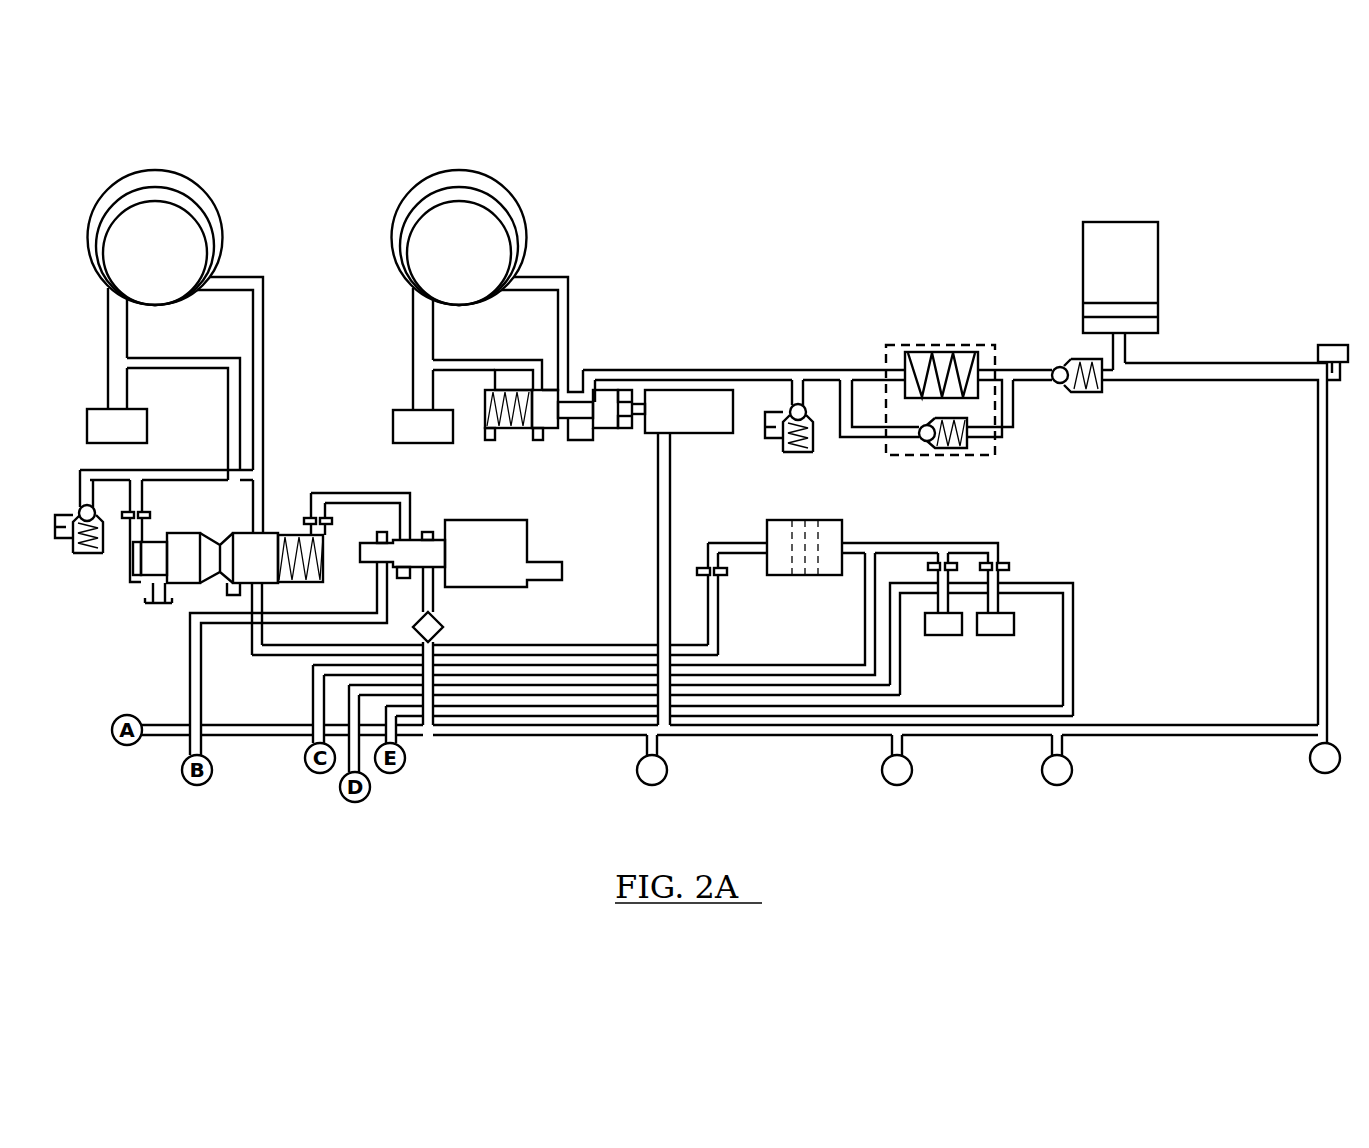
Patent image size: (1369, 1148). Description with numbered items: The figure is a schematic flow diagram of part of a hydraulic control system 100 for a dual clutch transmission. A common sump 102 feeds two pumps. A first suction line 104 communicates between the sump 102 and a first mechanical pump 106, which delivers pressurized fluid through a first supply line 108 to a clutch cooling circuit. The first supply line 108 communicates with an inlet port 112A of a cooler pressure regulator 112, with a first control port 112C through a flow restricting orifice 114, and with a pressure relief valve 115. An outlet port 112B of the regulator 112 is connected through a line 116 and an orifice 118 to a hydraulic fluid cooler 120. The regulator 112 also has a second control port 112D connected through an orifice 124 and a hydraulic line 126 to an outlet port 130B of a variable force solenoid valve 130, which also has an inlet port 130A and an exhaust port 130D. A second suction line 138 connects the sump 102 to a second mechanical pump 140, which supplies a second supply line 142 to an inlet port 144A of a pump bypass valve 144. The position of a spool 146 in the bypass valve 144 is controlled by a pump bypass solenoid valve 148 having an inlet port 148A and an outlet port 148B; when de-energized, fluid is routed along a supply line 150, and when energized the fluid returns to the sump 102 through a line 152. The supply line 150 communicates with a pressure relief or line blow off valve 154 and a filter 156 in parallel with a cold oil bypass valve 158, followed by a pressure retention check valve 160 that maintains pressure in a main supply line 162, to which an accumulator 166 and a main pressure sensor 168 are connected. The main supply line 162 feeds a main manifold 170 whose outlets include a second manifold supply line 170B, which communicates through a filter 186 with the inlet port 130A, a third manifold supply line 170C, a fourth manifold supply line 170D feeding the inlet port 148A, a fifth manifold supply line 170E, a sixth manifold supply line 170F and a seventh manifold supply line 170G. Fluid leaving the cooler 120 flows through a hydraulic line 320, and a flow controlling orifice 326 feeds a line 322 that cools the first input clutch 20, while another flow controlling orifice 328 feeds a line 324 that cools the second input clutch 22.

The hydraulic control system 100 is at (1118, 157).
The common sump 102 is at (105, 432).
The first suction line 104 is at (108, 348).
The first mechanical pump 106 is at (110, 186).
The first supply line 108 is at (264, 312).
The cooler pressure regulator 112 is at (223, 583).
The inlet port 112A is at (262, 552).
The outlet port 112B is at (254, 616).
The first control port 112C is at (133, 566).
The second control port 112D is at (326, 562).
The flow restricting orifice 114 is at (142, 512).
The pressure relief valve 115 is at (90, 553).
The line 116 is at (612, 645).
The orifice 118 is at (702, 566).
The hydraulic fluid cooler 120 is at (823, 520).
The orifice 124 is at (308, 517).
The hydraulic line 126 is at (411, 500).
The variable force solenoid valve 130 is at (471, 590).
The inlet port 130A is at (440, 580).
The outlet port 130B is at (382, 530).
The exhaust port 130D is at (445, 628).
The second suction line 138 is at (413, 346).
The second mechanical pump 140 is at (518, 248).
The second supply line 142 is at (569, 312).
The pump bypass valve 144 is at (583, 420).
The inlet port 144A is at (586, 378).
The spool 146 is at (545, 432).
The pump bypass solenoid valve 148 is at (708, 400).
The inlet port 148A is at (672, 445).
The outlet port 148B is at (648, 400).
The supply line 150 is at (793, 369).
The line 152 is at (498, 368).
The pressure relief or line blow off valve 154 is at (796, 455).
The filter 156 is at (942, 362).
The cold oil bypass valve 158 is at (952, 450).
The pressure retention check valve 160 is at (1082, 393).
The main supply line 162 is at (1318, 486).
The accumulator 166 is at (1100, 265).
The main pressure sensor 168 is at (1318, 352).
The main manifold 170 is at (1170, 724).
The second manifold supply line 170B is at (426, 745).
The third manifold supply line 170C is at (645, 742).
The fourth manifold supply line 170D is at (658, 590).
The fifth manifold supply line 170E is at (892, 742).
The sixth manifold supply line 170F is at (1052, 742).
The seventh manifold supply line 170G is at (1315, 746).
The filter 186 is at (438, 642).
The first input clutch 20 is at (936, 636).
The second input clutch 22 is at (993, 636).
The hydraulic line 320 is at (752, 665).
The line 322 is at (873, 660).
The line 324 is at (1074, 673).
The flow controlling orifice 326 is at (934, 562).
The flow controlling orifice 328 is at (1005, 562).